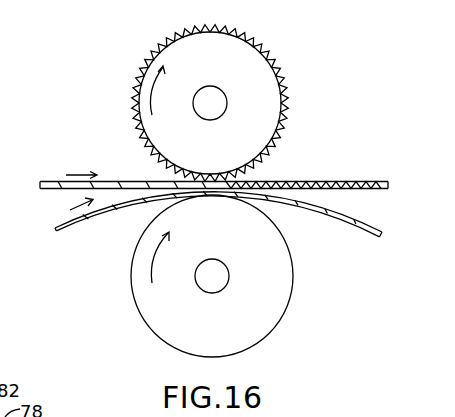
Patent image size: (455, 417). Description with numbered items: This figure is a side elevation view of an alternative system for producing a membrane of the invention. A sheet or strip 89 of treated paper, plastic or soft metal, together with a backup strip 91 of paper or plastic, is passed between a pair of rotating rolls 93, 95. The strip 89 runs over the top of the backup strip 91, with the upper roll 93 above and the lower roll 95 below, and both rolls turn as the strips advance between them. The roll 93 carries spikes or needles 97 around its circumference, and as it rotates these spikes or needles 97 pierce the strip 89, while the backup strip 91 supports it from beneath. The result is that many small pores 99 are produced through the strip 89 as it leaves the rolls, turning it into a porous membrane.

The sheet or strip 89 is at (57, 181).
The backup strip 91 is at (73, 225).
The rotating roll 93 is at (250, 62).
The rotating roll 95 is at (285, 292).
The spikes or needles 97 is at (286, 108).
The small pores 99 is at (325, 183).